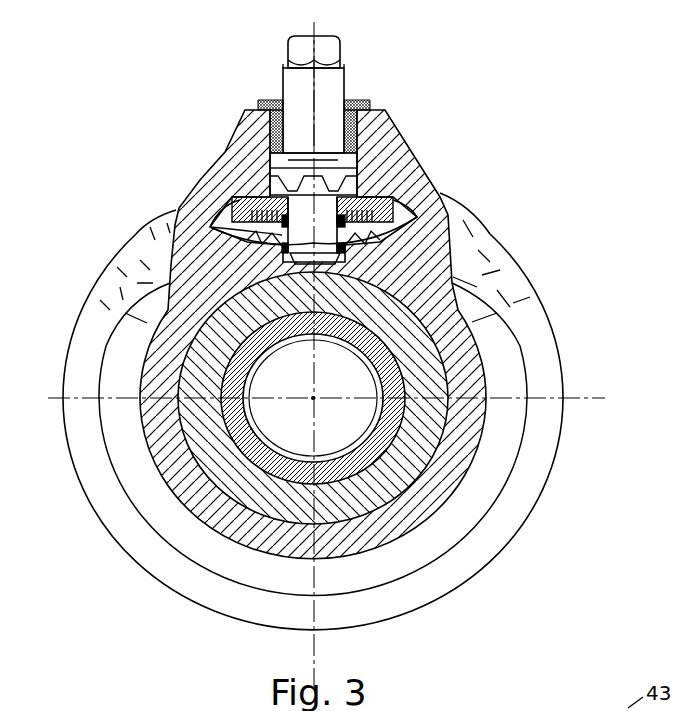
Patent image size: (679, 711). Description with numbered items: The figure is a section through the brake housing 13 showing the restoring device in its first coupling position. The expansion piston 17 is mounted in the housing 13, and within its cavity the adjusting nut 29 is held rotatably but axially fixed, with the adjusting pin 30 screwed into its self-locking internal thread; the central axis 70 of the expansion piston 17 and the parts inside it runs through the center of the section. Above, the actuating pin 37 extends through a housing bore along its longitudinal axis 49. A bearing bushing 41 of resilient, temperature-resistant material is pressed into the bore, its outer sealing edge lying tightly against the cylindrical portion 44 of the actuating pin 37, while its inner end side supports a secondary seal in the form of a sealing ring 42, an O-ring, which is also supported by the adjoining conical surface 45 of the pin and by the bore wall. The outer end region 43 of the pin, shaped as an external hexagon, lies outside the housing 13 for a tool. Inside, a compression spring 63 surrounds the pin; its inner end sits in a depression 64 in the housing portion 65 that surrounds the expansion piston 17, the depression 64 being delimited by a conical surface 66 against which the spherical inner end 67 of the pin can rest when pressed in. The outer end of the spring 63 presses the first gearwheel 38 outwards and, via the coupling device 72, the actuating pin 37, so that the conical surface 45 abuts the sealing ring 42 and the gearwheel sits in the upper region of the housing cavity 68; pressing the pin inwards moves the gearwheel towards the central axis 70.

The housing 13 is at (463, 373).
The expansion piston 17 is at (437, 419).
The adjusting nut 29 is at (388, 437).
The adjusting pin 30 is at (325, 440).
The actuating pin 37 is at (283, 67).
The first gearwheel 38 is at (400, 205).
The bearing bushing 41 is at (375, 112).
The sealing ring 42 is at (358, 158).
The outer end region 43 is at (322, 48).
The cylindrical portion 44 is at (325, 98).
The conical surface 45 is at (333, 163).
The longitudinal axis 49 is at (314, 118).
The spring 63 is at (383, 238).
The depression 64 is at (352, 252).
The housing portion 65 is at (350, 258).
The conical surface 66 is at (348, 266).
The spherical inner end 67 is at (335, 268).
The housing cavity 68 is at (238, 230).
The central axis 70 is at (313, 398).
The coupling device 72 is at (264, 178).